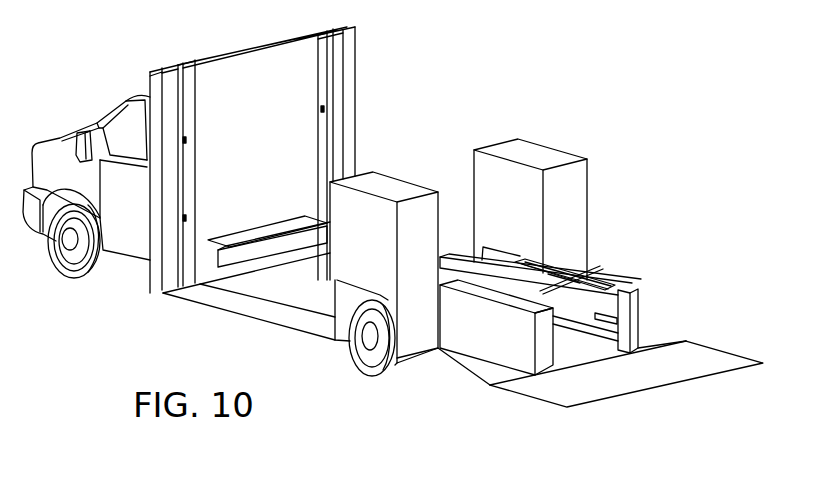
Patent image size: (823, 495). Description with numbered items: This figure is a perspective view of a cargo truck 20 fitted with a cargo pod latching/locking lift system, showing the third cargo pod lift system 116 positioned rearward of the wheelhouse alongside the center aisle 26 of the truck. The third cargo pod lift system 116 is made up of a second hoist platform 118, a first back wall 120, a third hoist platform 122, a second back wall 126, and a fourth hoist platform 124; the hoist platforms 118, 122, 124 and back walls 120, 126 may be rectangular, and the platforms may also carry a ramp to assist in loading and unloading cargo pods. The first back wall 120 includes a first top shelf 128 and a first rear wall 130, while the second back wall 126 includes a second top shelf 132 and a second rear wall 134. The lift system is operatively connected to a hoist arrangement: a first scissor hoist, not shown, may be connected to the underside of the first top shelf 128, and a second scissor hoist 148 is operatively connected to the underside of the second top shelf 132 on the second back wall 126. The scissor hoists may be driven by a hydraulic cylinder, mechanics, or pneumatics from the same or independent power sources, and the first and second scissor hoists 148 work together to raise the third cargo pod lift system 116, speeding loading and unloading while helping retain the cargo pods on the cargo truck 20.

The cargo truck 20 is at (90, 83).
The center aisle 26 is at (568, 308).
The third cargo pod lift system 116 is at (742, 340).
The second hoist platform 118 is at (472, 368).
The first back wall 120 is at (462, 330).
The third hoist platform 122 is at (652, 340).
The fourth hoist platform 124 is at (685, 365).
The second back wall 126 is at (632, 280).
The first top shelf 128 is at (507, 300).
The first rear wall 130 is at (543, 357).
The second top shelf 132 is at (595, 280).
The second rear wall 134 is at (628, 313).
The second scissor hoist 148 is at (593, 288).